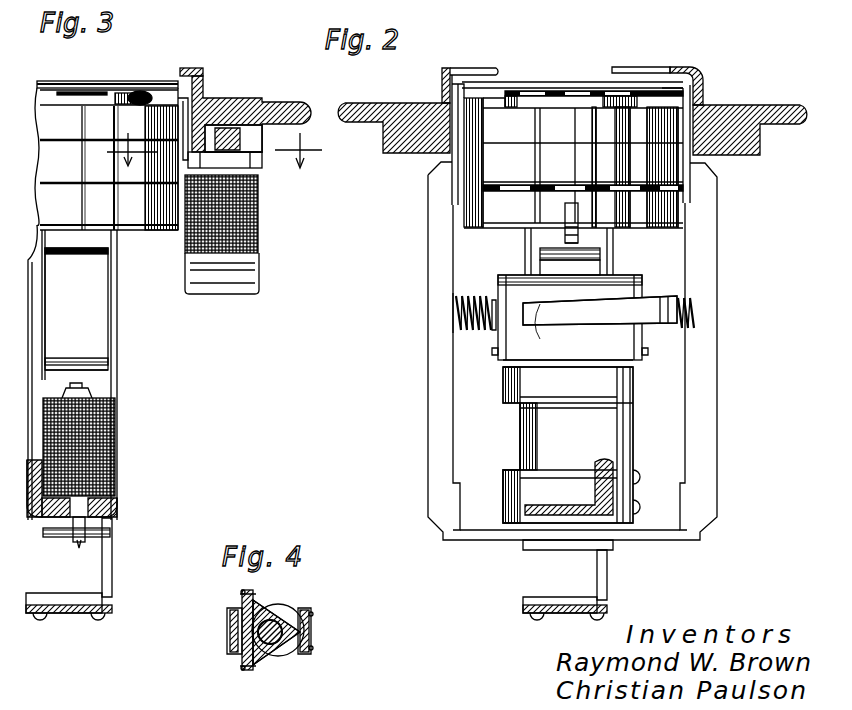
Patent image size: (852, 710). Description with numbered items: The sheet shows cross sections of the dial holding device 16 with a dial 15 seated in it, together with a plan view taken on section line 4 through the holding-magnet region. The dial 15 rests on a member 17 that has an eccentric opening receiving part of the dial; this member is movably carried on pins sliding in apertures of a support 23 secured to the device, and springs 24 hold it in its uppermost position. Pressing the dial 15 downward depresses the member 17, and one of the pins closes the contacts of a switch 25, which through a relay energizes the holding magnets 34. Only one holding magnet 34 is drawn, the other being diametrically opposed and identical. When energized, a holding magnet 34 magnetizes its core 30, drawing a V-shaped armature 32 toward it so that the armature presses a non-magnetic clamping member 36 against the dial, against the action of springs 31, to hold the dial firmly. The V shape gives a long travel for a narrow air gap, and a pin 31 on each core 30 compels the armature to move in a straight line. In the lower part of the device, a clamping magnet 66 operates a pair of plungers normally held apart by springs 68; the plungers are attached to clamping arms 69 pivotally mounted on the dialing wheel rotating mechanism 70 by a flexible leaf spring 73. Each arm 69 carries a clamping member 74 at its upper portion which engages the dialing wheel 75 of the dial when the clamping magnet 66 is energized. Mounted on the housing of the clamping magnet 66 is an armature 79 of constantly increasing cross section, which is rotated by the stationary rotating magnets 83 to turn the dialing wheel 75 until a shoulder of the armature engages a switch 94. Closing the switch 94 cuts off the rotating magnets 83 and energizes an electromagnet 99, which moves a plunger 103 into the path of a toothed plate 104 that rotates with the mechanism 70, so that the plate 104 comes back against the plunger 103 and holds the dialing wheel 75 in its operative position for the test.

In FIG. 3, the section line 4— 4 is at (212, 150).
In FIG. 3, the dial 15 is at (147, 94).
In FIG. 2, the dial 15 is at (460, 100).
In FIG. 3, the dial holding device 16 is at (252, 98).
In FIG. 2, the dial holding device 16 is at (766, 82).
In FIG. 3, the member 17 is at (181, 98).
In FIG. 2, the member 17 is at (690, 212).
In FIG. 3, the support 23 is at (130, 218).
In FIG. 2, the support 23 is at (670, 228).
In FIG. 2, the springs 24 is at (500, 186).
In FIG. 2, the switch 25 is at (563, 235).
In FIG. 4, the cores 30 is at (270, 657).
In FIG. 3, the springs / pin 31 is at (240, 280).
In FIG. 4, the springs / pin 31 is at (233, 632).
In FIG. 3, the V-shaped armatures 32 is at (255, 165).
In FIG. 4, the V-shaped armatures 32 is at (290, 608).
In FIG. 3, the holding magnets 34 is at (258, 230).
In FIG. 4, the holding magnets 34 is at (275, 607).
In FIG. 3, the clamping members 36 is at (205, 88).
In FIG. 2, the clamping magnet 66 is at (506, 278).
In FIG. 2, the springs 68 is at (455, 312).
In FIG. 2, the clamping arms 69 is at (430, 357).
In FIG. 2, the dialing wheel rotating mechanism 70 is at (716, 271).
In FIG. 2, the flexible leaf spring 73 is at (607, 560).
In FIG. 2, the clamping member 74 is at (454, 68).
In FIG. 2, the dialing wheel 75 is at (510, 80).
In FIG. 2, the armature 79 is at (665, 330).
In FIG. 3, the rotating magnets 83 is at (90, 298).
In FIG. 2, the rotating magnets 83 is at (628, 244).
In FIG. 2, the switch 94 is at (618, 436).
In FIG. 3, the electromagnet 99 is at (115, 433).
In FIG. 3, the plunger 103 is at (80, 542).
In FIG. 3, the toothed plate 104 is at (112, 535).